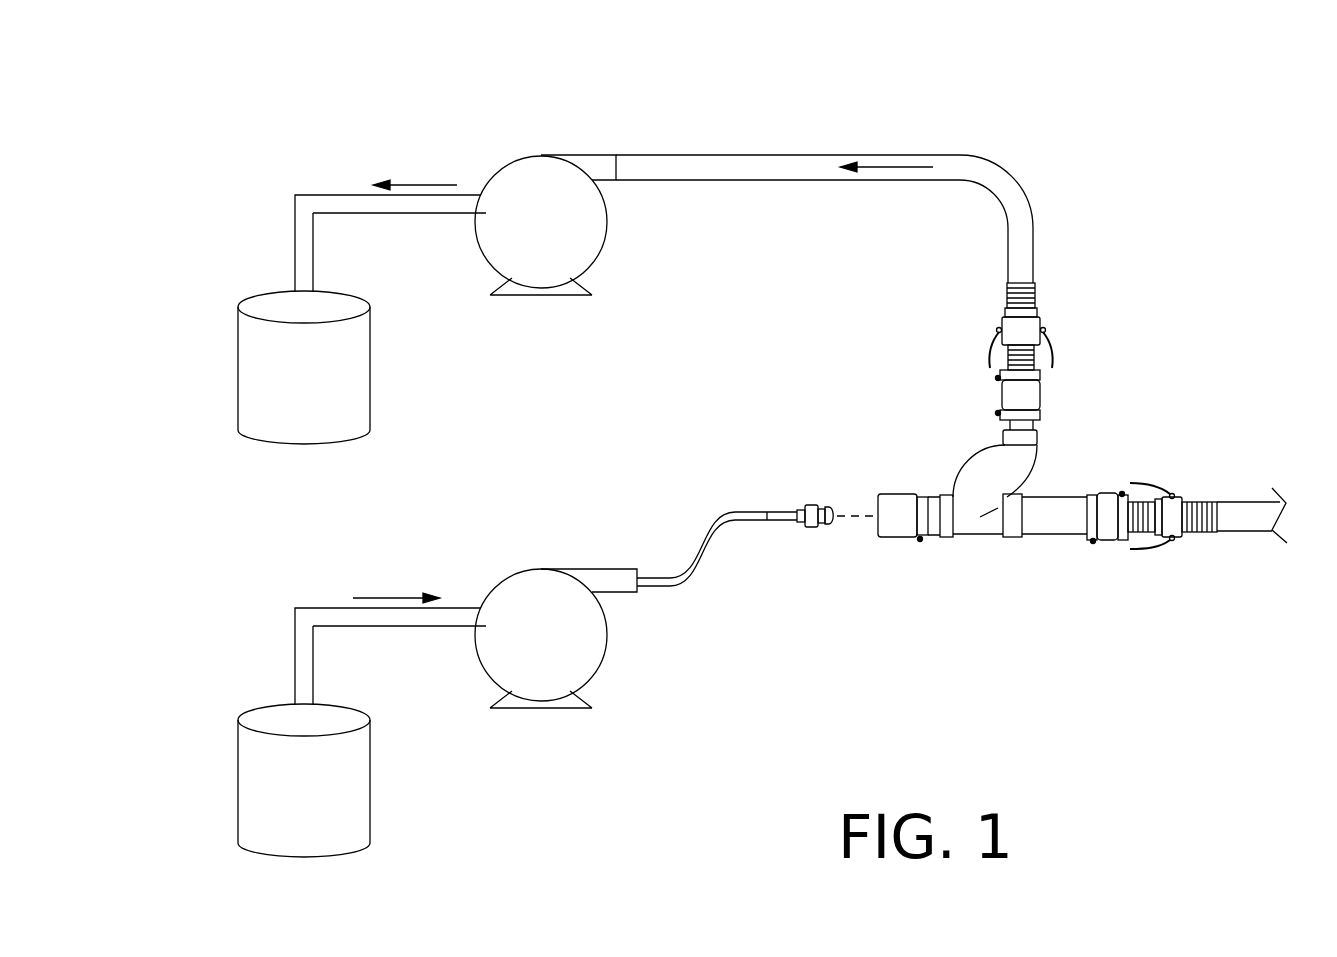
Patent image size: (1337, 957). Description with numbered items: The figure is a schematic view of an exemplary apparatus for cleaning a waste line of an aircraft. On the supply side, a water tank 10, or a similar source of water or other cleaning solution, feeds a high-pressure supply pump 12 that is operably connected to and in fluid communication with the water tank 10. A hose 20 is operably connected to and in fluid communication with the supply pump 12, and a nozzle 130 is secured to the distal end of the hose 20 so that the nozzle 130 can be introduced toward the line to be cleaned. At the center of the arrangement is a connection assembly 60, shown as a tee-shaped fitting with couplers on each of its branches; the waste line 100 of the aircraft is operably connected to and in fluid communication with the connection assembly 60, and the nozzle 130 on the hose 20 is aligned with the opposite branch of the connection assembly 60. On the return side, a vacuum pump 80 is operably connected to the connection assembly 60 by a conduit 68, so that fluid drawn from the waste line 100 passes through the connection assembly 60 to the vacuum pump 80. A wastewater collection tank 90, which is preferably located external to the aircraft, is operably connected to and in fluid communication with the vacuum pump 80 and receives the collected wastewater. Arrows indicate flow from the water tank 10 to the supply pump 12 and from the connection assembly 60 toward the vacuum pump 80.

The water tank 10 is at (342, 758).
The high-pressure supply pump 12 is at (557, 583).
The hose 20 is at (703, 563).
The connection assembly 60 is at (982, 528).
The return pipe 68 is at (878, 160).
The vacuum pump 80 is at (525, 183).
The wastewater collection tank 90 is at (265, 360).
The waste line 100 is at (1257, 503).
The nozzle 130 is at (812, 503).